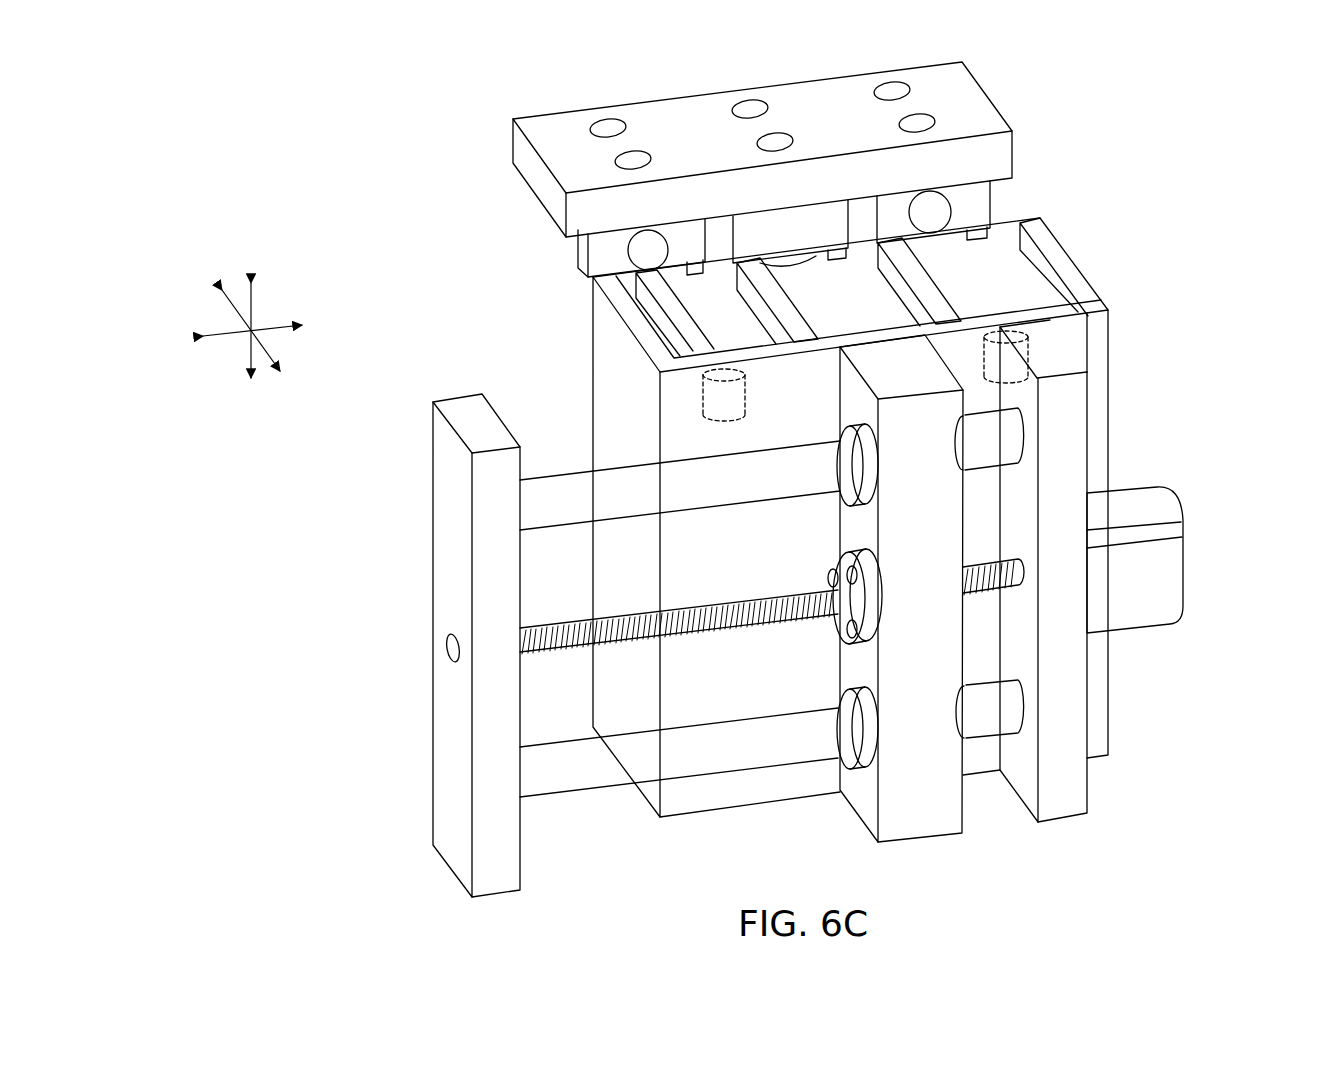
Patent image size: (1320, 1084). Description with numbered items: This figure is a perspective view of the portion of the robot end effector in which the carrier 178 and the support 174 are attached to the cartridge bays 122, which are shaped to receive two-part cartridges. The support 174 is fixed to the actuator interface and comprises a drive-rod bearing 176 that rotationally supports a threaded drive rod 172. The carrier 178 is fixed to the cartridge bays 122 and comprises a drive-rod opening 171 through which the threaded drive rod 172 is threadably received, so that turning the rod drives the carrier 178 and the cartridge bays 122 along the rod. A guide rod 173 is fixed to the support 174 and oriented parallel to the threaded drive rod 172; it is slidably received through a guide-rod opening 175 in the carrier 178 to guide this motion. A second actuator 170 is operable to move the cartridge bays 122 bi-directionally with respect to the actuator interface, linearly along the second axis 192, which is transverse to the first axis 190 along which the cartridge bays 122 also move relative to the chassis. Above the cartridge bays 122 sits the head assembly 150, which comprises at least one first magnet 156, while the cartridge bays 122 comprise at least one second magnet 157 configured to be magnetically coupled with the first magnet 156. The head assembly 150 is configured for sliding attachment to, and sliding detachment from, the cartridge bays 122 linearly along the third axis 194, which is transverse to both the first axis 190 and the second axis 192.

The cartridge bays 122 is at (1110, 726).
The head assembly 150 is at (1016, 138).
The first magnet 156 is at (652, 265).
The second magnet 157 is at (716, 372).
The second actuator 170 is at (1188, 578).
The drive-rod opening 171 is at (822, 580).
The threaded drive rod 172 is at (567, 620).
The guide rod 173 is at (560, 478).
The support 174 is at (432, 832).
The guide-rod opening 175 is at (832, 436).
The drive-rod bearing 176 is at (443, 641).
The carrier 178 is at (908, 846).
The first axis 190 is at (253, 297).
The second axis 192 is at (222, 336).
The third axis 194 is at (265, 348).